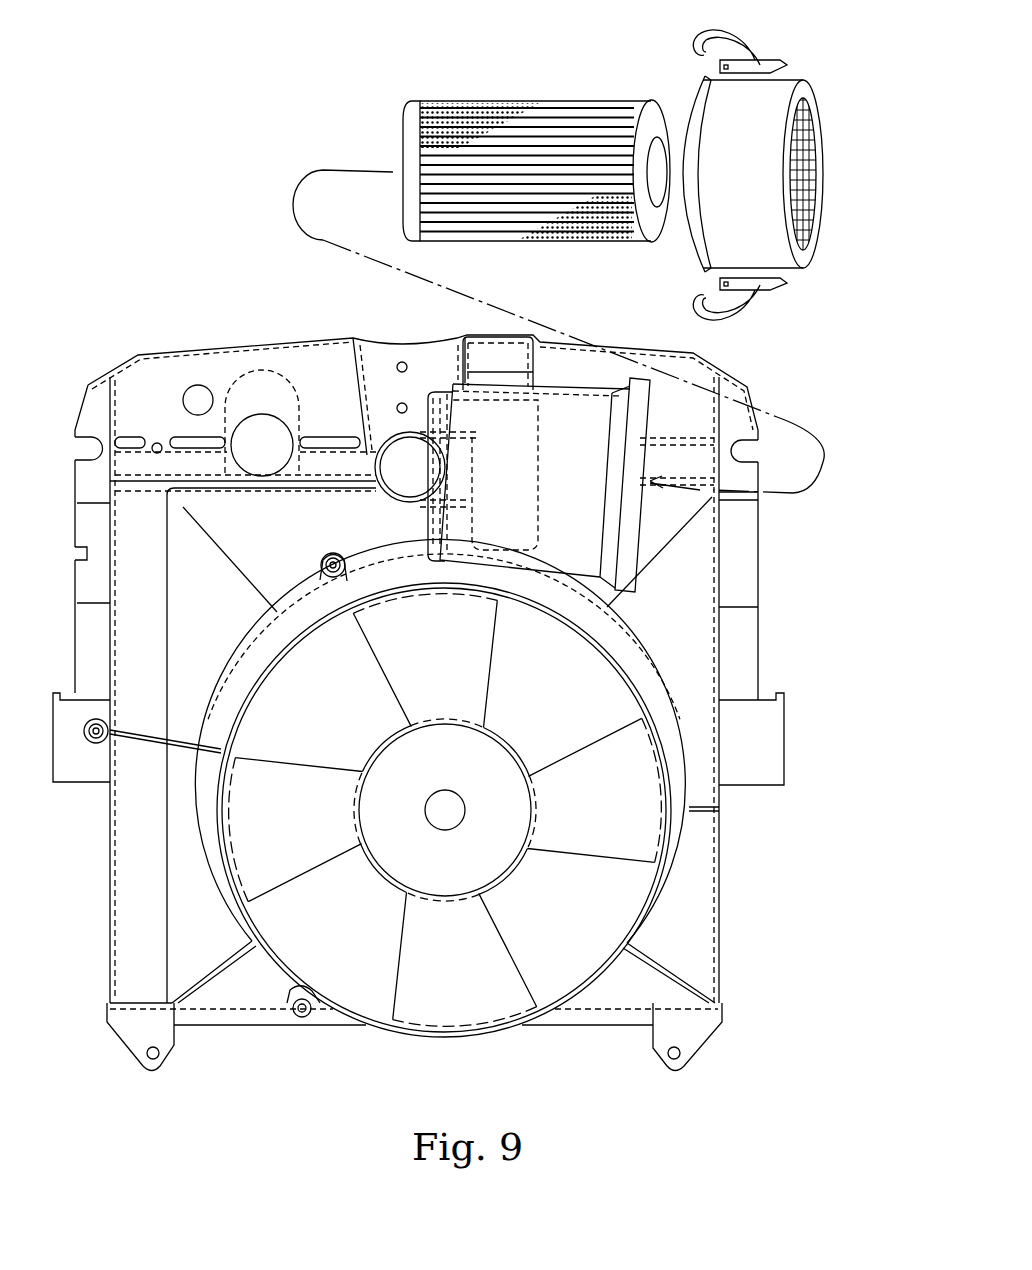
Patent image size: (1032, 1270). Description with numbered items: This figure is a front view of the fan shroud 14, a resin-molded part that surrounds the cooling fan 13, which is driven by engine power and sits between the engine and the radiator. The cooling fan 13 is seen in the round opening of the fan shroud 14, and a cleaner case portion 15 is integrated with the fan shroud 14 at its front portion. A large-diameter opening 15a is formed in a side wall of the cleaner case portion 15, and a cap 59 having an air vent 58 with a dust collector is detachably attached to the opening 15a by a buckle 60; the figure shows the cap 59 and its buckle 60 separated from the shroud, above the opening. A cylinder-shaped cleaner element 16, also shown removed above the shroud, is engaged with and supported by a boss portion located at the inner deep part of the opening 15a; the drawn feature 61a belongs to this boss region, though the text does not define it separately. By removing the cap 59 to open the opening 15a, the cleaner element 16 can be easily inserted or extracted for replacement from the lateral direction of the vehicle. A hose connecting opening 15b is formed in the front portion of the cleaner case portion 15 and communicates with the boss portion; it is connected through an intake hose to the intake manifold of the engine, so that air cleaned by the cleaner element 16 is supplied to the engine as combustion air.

The cooling fan 13 is at (394, 964).
The fan shroud 14 is at (705, 889).
The cleaner case portion 15 is at (520, 452).
The large-diameter opening 15a is at (649, 531).
The hose connecting opening 15b is at (398, 497).
The cleaner element 16 is at (512, 100).
The air vent 58 is at (818, 226).
The cap 59 is at (700, 232).
The buckle 60 is at (770, 62).
The duct opening 61a is at (518, 478).